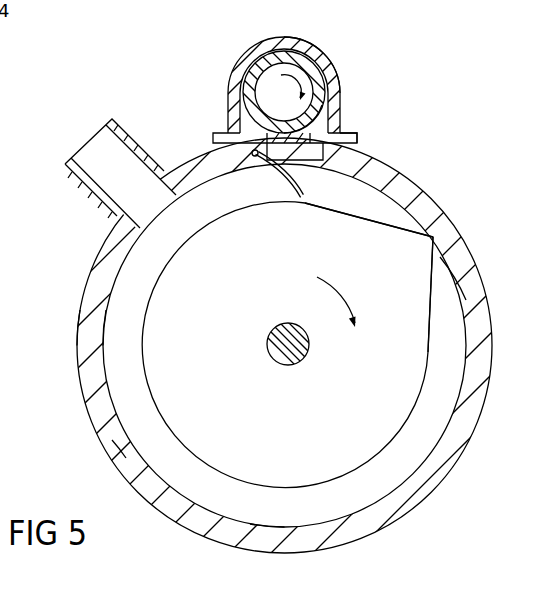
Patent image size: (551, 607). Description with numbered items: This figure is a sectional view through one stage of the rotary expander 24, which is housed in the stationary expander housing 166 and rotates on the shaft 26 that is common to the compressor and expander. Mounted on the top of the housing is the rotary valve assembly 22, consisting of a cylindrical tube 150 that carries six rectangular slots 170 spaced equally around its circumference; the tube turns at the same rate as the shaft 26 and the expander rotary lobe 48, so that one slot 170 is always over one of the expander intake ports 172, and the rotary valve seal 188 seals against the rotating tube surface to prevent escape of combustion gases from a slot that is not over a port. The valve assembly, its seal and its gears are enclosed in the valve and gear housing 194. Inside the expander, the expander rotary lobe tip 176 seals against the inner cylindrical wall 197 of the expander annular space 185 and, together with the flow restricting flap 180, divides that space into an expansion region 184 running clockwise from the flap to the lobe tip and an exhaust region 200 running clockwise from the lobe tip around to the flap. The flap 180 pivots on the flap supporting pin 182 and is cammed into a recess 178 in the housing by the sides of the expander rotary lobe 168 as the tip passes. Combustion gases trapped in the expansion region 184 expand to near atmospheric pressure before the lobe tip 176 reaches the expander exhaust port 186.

The rotary valve assembly 22 is at (282, 101).
The rotary expander 24 is at (98, 247).
The shaft 26 is at (297, 325).
The expander rotary lobe 48 is at (188, 262).
The cylindrical tube 150 is at (240, 88).
The expander housing 166 is at (78, 322).
The expander rotary lobe 168 is at (435, 270).
The rectangular slot 170 is at (307, 128).
The expander intake port 172 is at (284, 143).
The expander rotary lobe tip 176 is at (432, 239).
The recess 178 is at (353, 146).
The flow restricting flap 180 is at (282, 163).
The flap supporting pin 182 is at (230, 154).
The expansion region 184 is at (362, 192).
The expander annular space 185 is at (113, 437).
The expander exhaust port 186 is at (101, 148).
The rotary valve seal 188 is at (303, 54).
The valve and gear housing 194 is at (250, 48).
The inner cylindrical wall 197 is at (247, 522).
The exhaust region 200 is at (143, 354).